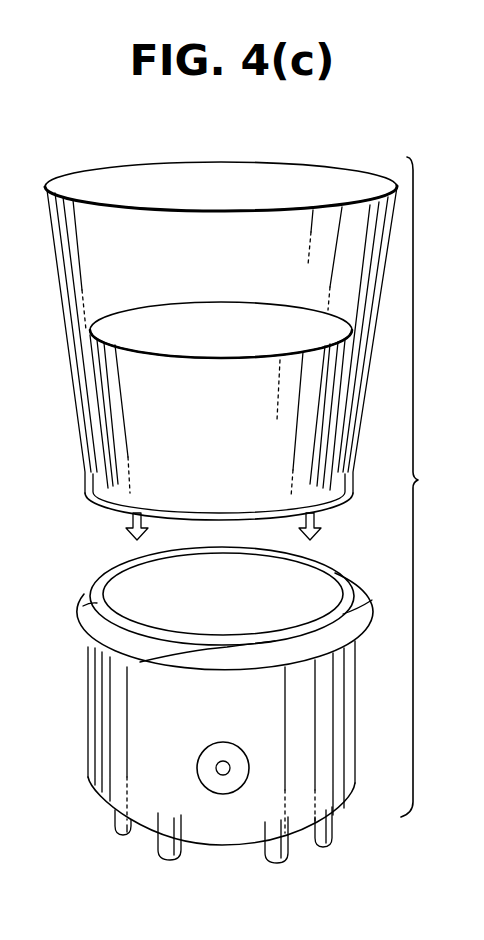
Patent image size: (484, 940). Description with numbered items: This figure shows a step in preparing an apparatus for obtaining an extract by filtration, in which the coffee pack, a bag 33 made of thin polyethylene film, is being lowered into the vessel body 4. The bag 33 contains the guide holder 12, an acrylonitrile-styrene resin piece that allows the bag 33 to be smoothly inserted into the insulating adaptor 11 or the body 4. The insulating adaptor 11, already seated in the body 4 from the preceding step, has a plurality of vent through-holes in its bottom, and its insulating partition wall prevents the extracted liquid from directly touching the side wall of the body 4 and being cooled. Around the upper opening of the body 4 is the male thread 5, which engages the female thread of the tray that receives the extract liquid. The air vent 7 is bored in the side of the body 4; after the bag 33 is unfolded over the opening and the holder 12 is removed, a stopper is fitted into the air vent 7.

The coffee pack 33 is at (222, 178).
The guide holder 12 is at (150, 464).
The insulating adaptor 11 is at (317, 567).
The male thread 5 is at (86, 612).
The vessel body 4 is at (153, 810).
The air vent 7 is at (228, 773).